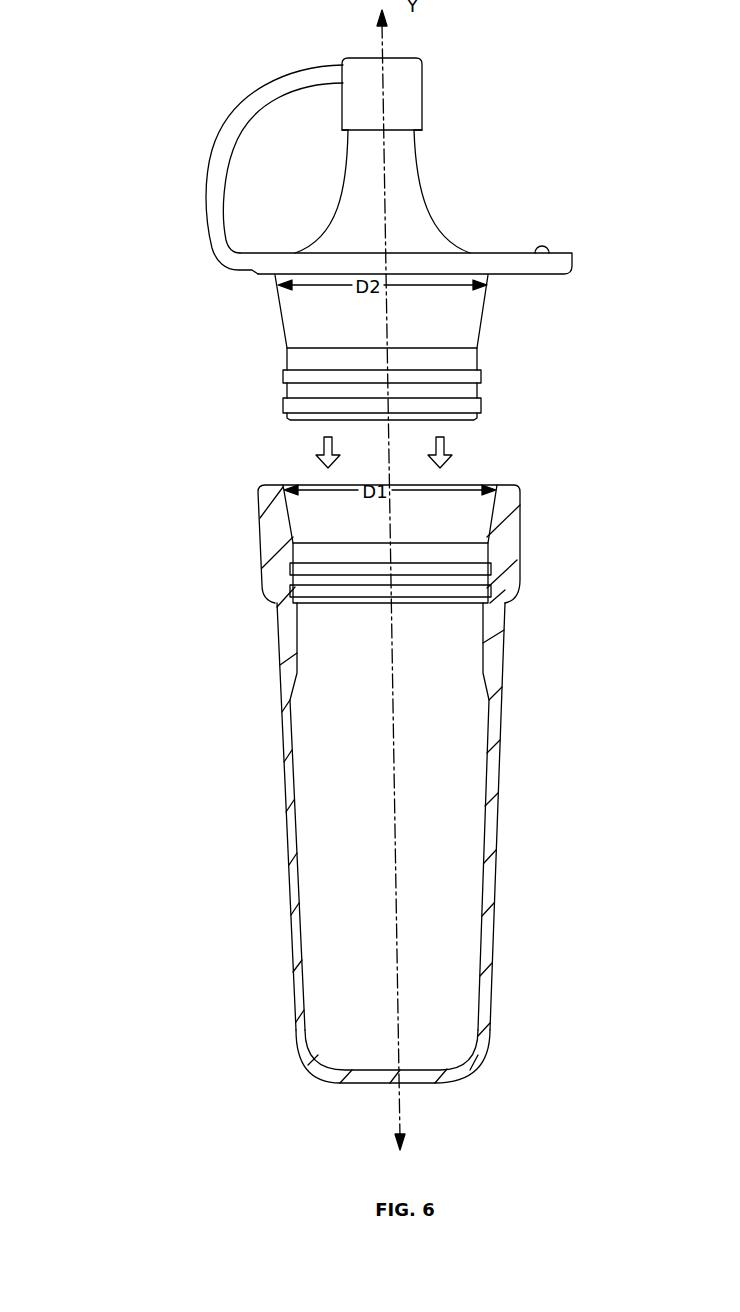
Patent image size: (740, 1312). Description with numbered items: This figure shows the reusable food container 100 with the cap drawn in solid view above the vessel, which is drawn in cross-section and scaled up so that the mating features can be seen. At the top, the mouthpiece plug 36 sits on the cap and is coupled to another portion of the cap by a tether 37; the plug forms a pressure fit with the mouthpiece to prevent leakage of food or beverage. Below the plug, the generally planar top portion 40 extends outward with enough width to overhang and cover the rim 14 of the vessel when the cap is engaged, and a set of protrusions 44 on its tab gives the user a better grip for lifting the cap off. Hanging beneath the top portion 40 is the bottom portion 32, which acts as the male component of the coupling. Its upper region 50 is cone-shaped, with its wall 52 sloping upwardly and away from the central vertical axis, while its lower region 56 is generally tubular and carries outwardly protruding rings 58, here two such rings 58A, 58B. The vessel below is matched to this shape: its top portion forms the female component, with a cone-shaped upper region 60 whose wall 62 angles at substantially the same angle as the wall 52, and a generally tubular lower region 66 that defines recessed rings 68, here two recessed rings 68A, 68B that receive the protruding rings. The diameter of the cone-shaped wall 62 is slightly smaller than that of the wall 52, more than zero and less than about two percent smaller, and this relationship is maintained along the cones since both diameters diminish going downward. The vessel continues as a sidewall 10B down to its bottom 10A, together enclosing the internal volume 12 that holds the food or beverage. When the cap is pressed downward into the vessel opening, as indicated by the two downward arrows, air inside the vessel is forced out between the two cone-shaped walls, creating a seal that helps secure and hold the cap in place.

The reusable food container 100 is at (147, 58).
The bottom portion 32 is at (546, 340).
The mouthpiece plug 36 is at (420, 93).
The tether 37 is at (233, 112).
The top portion 40 is at (574, 264).
The protrusions 44 is at (541, 246).
The upper region 50 is at (257, 275).
The wall 52 is at (478, 316).
The lower region 56 is at (257, 350).
The outwardly protruding ring 58 is at (549, 356).
The outwardly protruding ring 58A is at (481, 376).
The outwardly protruding ring 58B is at (481, 404).
The rim 14 is at (272, 488).
The upper region 60 is at (244, 487).
The wall 62 is at (497, 510).
The lower region 66 is at (244, 547).
The recessed ring 68 is at (584, 553).
The recessed ring 68A is at (487, 572).
The recessed ring 68B is at (487, 594).
The sidewall 10B is at (495, 750).
The bottom 10A is at (452, 1083).
The internal volume 12 is at (356, 1058).